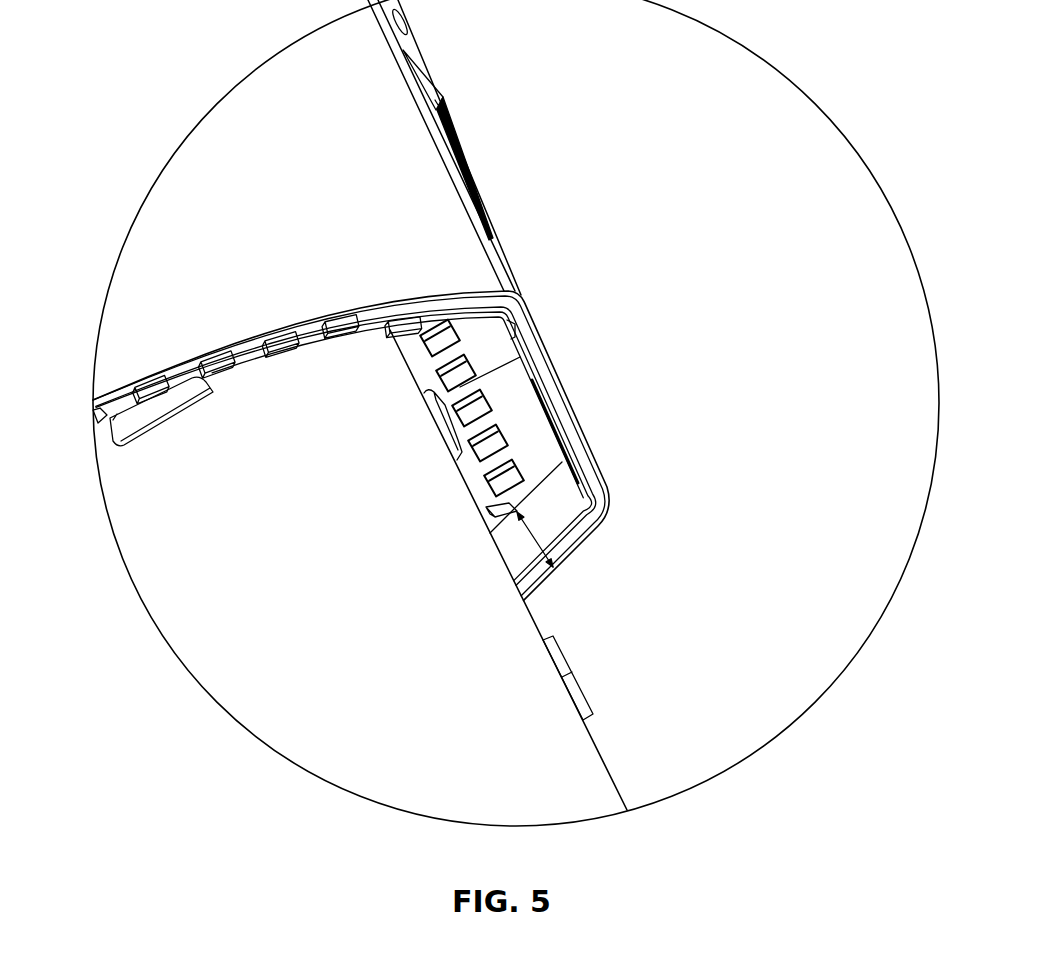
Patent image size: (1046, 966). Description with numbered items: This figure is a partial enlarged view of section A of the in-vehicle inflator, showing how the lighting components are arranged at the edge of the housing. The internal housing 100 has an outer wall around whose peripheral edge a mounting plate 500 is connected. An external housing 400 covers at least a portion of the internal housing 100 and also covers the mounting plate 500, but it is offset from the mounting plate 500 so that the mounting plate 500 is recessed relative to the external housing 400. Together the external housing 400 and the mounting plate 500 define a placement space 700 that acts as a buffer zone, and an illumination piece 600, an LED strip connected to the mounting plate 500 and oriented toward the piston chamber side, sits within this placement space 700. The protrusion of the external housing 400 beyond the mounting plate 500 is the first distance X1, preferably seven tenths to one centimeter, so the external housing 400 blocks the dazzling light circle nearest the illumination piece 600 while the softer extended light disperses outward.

The internal housing 100 is at (207, 550).
The external housing 400 is at (410, 160).
The mounting plate 500 is at (488, 333).
The illumination piece 600 is at (500, 432).
The placement space 700 is at (545, 505).
The first distance X1 is at (526, 541).
The section A is at (810, 98).